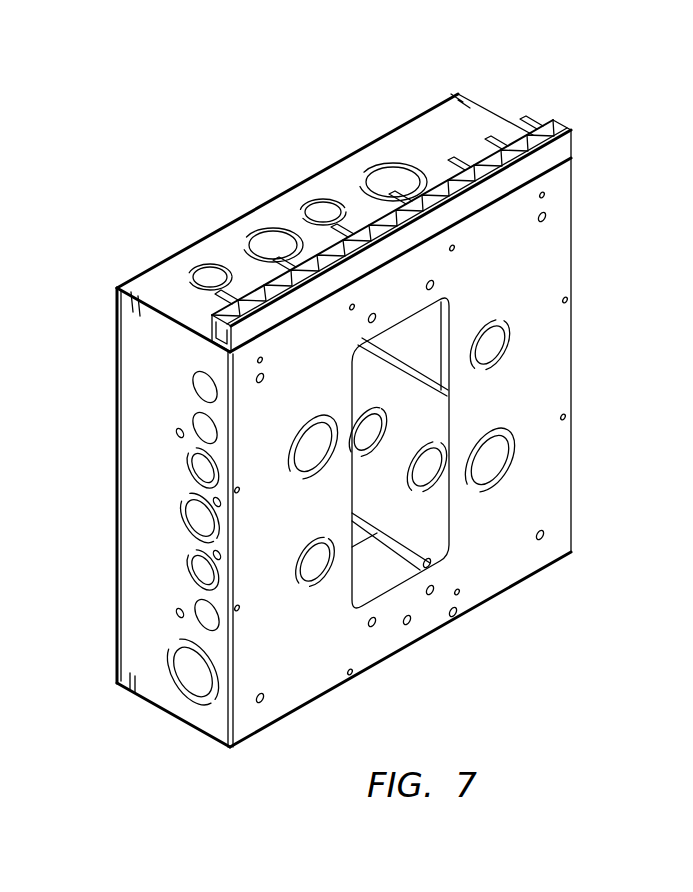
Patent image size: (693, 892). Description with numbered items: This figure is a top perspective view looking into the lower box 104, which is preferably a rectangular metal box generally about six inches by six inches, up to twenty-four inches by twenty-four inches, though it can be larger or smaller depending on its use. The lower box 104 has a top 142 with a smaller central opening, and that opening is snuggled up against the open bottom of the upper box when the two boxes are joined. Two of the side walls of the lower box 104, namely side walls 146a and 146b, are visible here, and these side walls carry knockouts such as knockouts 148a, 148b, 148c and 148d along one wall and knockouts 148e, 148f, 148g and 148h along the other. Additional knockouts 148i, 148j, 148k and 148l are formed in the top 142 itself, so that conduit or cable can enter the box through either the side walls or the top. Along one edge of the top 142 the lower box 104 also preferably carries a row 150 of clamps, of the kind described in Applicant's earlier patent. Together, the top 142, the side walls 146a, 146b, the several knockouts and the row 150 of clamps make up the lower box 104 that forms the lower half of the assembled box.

The lower box 104 is at (198, 117).
The top 142 is at (543, 248).
The side wall 146a is at (477, 122).
The side wall 146b is at (140, 363).
The knockout 148a is at (396, 172).
The knockout 148b is at (330, 210).
The knockout 148c is at (273, 247).
The knockout 148d is at (217, 278).
The knockout 148e is at (205, 470).
The knockout 148f is at (198, 523).
The knockout 148g is at (197, 575).
The knockout 148h is at (197, 682).
The knockout 148i is at (322, 447).
The knockout 148j is at (490, 347).
The knockout 148k is at (490, 465).
The knockout 148l is at (315, 563).
The row of clamps 150 is at (579, 117).